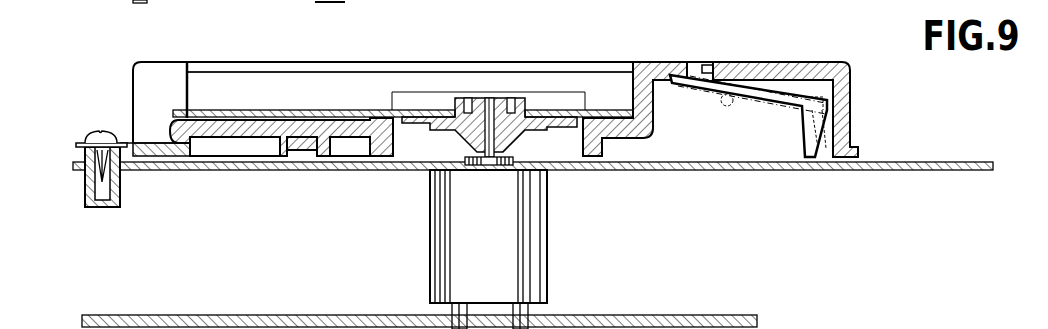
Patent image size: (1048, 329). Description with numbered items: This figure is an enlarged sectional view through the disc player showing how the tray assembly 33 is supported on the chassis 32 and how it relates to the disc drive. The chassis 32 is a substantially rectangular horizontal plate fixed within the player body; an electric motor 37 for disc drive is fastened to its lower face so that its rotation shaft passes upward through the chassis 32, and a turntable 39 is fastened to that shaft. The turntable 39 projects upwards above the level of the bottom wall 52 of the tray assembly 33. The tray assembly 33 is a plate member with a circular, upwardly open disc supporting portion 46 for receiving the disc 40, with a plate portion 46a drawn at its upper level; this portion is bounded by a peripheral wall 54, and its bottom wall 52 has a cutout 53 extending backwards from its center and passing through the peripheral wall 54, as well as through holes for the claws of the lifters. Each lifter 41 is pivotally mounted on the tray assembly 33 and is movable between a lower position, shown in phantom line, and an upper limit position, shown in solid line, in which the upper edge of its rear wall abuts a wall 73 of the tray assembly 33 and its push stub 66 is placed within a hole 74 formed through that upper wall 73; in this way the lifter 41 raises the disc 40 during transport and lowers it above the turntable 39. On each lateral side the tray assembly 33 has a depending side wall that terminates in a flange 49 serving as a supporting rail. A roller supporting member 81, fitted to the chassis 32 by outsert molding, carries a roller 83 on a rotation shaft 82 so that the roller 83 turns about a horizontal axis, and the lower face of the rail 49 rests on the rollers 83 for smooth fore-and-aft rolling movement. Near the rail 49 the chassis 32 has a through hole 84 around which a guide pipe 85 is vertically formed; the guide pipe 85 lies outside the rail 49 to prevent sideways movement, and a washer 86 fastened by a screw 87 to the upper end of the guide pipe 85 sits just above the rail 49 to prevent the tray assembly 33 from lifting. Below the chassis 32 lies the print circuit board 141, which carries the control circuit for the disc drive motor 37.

The chassis 32 is at (328, 160).
The tray assembly 33 is at (795, 58).
The electric motor 37 is at (548, 226).
The turntable 39 is at (440, 130).
The disc 40 is at (373, 108).
The lifter 41 is at (820, 96).
The disc supporting portion 46 is at (325, 118).
The support plate 46a is at (272, 118).
The flange 49 is at (128, 152).
The bottom wall 52 is at (630, 140).
The cutout 53 is at (574, 161).
The peripheral wall 54 is at (245, 88).
The push stub 66 is at (694, 62).
The wall 73 is at (750, 62).
The hole 74 is at (716, 78).
The roller supporting member 81 is at (88, 0).
The rotation shaft 82 is at (120, 0).
The roller 83 is at (147, 2).
The through hole 84 is at (92, 178).
The guide pipe 85 is at (118, 190).
The washer 86 is at (82, 143).
The screw 87 is at (110, 140).
The print circuit board 141 is at (331, 315).